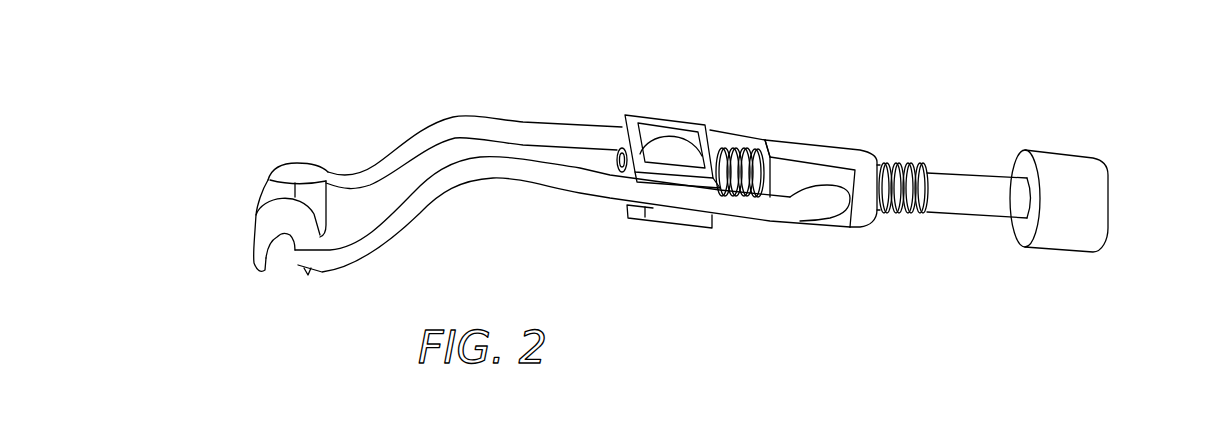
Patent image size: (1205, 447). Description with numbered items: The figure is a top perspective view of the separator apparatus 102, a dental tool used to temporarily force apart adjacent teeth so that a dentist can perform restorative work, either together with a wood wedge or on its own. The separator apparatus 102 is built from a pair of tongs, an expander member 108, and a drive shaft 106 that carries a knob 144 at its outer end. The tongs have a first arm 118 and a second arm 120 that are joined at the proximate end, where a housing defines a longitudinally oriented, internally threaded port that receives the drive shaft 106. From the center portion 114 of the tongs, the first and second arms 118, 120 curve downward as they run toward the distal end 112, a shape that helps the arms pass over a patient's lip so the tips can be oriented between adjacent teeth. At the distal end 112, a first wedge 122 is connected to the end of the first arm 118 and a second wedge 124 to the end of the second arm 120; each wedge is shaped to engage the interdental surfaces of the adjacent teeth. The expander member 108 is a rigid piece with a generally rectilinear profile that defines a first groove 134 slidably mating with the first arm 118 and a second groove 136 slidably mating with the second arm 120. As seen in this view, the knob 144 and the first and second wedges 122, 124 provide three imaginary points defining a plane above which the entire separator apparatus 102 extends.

The separator apparatus 102 is at (502, 212).
The drive shaft 106 is at (973, 198).
The expander member 108 is at (702, 128).
The distal end 112 is at (294, 253).
The center portion 114 is at (477, 127).
The first arm 118 is at (555, 178).
The second arm 120 is at (525, 133).
The first wedge 122 is at (263, 240).
The second wedge 124 is at (298, 166).
The first groove 134 is at (645, 218).
The second groove 136 is at (619, 147).
The knob 144 is at (1072, 168).